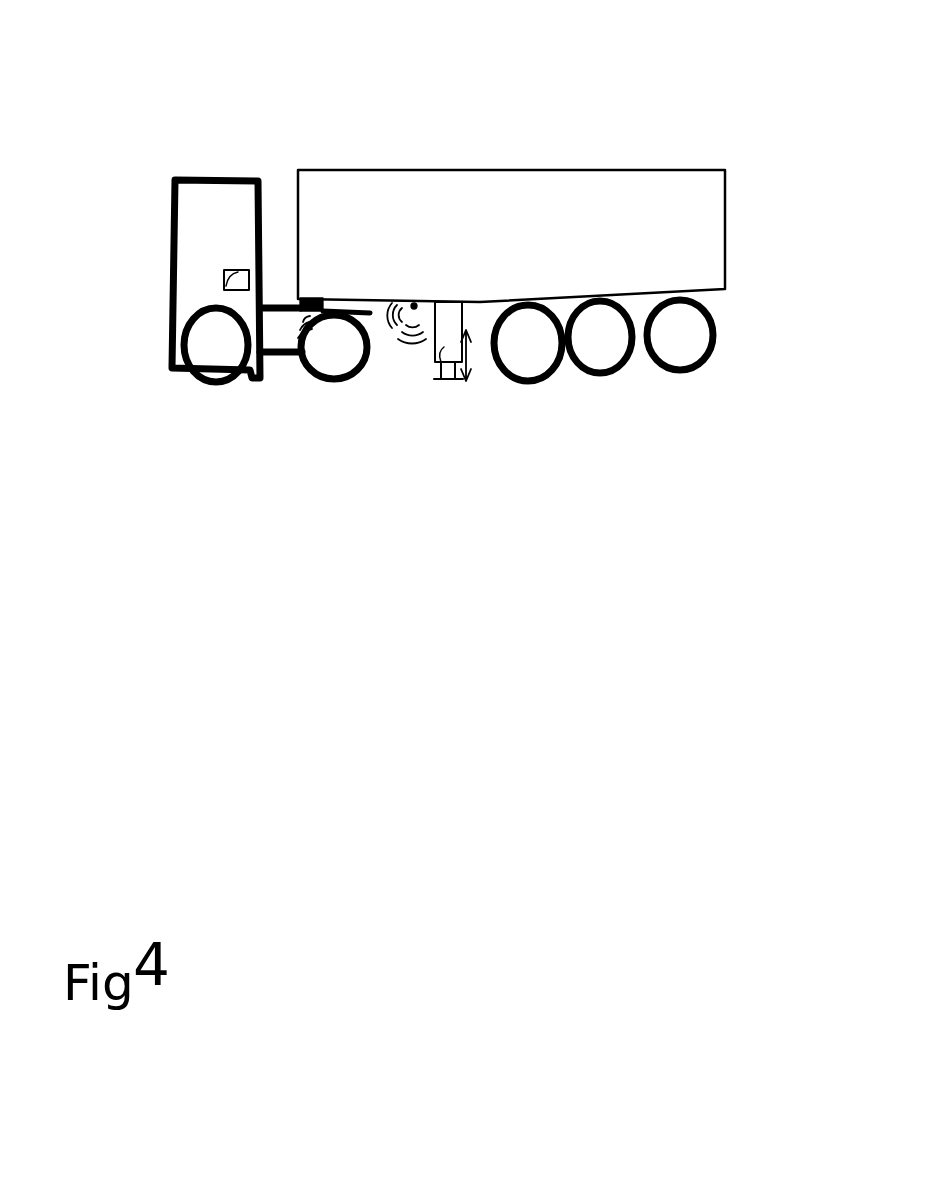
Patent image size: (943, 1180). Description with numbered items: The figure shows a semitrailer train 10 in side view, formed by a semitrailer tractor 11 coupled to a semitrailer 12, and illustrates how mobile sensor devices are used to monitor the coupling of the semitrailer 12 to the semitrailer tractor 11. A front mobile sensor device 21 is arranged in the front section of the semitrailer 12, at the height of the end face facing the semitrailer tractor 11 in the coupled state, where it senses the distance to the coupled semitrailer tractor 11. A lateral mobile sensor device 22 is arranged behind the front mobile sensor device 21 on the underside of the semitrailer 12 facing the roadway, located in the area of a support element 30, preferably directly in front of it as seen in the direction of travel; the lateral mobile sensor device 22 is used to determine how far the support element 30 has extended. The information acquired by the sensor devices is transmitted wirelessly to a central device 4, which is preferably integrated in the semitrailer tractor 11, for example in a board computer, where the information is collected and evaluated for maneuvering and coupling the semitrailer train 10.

The semitrailer train 10 is at (748, 118).
The semitrailer tractor 11 is at (243, 207).
The semitrailer 12 is at (515, 193).
The central device 4 is at (225, 278).
The front mobile sensor device 21 is at (297, 314).
The lateral mobile sensor device 22 is at (408, 345).
The support element 30 is at (445, 382).